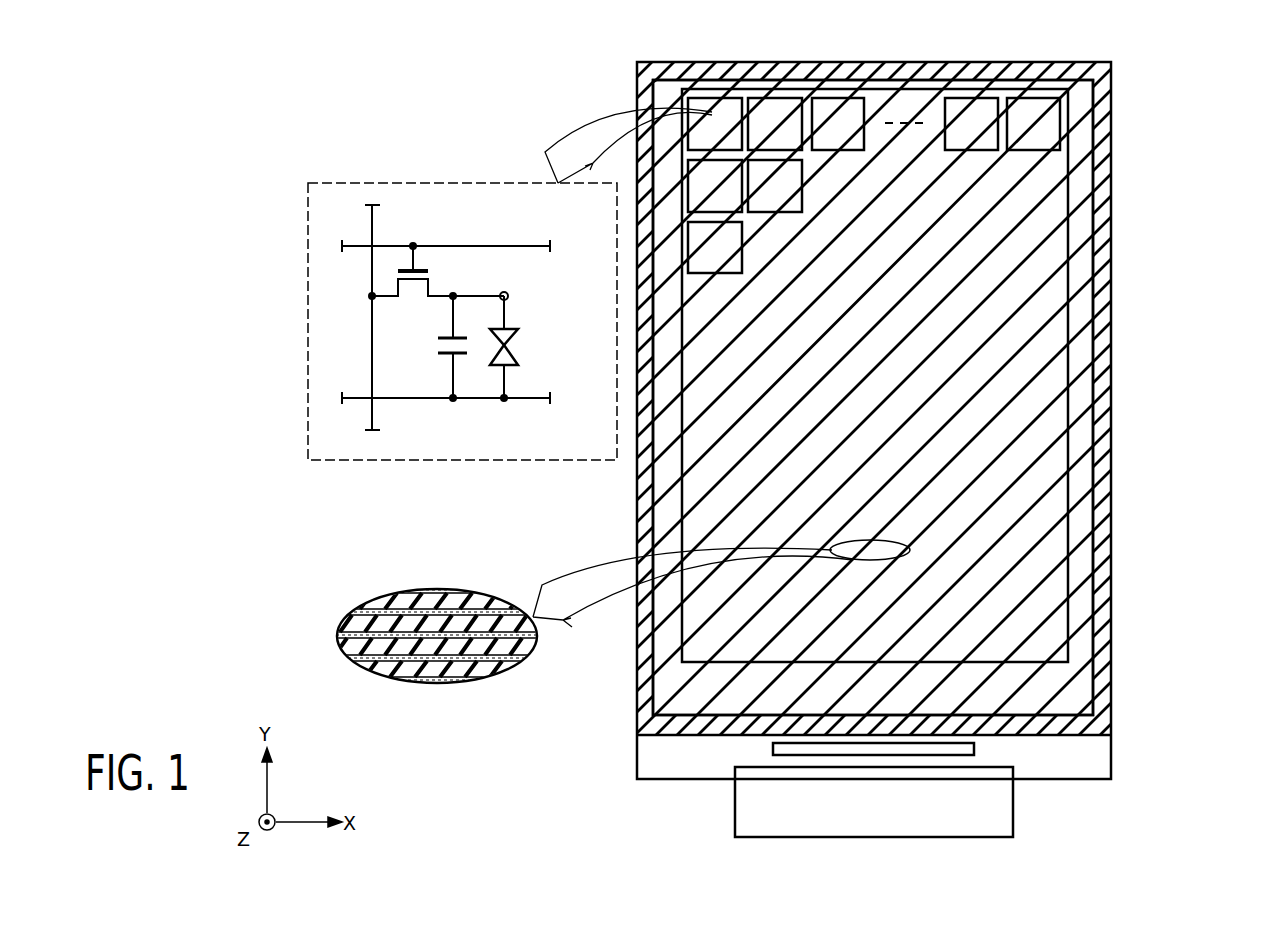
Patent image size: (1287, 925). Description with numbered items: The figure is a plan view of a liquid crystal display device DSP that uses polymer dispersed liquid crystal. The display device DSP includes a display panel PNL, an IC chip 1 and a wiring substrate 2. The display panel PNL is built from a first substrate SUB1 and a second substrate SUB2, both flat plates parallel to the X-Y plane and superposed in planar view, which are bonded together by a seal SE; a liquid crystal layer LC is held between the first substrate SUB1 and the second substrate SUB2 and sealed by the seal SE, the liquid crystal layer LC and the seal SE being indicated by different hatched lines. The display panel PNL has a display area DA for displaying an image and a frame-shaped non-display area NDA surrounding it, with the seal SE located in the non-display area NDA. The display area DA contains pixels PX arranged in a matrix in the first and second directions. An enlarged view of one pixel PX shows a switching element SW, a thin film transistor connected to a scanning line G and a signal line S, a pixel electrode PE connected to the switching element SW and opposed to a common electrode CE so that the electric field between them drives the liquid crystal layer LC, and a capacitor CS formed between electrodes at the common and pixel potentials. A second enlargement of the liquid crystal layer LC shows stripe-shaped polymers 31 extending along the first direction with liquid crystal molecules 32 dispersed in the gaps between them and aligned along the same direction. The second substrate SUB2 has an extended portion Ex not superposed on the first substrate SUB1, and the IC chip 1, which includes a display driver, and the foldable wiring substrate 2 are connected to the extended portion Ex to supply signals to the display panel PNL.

The pixel PX is at (832, 97).
The display panel PNL is at (1117, 57).
The display device DSP is at (1198, 108).
The scanning line G is at (355, 245).
The signal line S is at (372, 332).
The switching element SW is at (450, 277).
The pixel electrode PE is at (512, 296).
The common electrode CE is at (527, 400).
The capacitor CS is at (425, 348).
The liquid crystal layer LC is at (1082, 683).
The display area DA is at (1082, 444).
The non-display area NDA is at (1120, 516).
The seal SE is at (1110, 598).
The first substrate SUB1 is at (1103, 713).
The second substrate SUB2 is at (1102, 758).
The extended portion Ex is at (637, 755).
The IC chip 1 is at (975, 750).
The wiring substrate 2 is at (1013, 820).
The polymer 31 is at (340, 647).
The liquid crystal molecule 32 is at (428, 660).